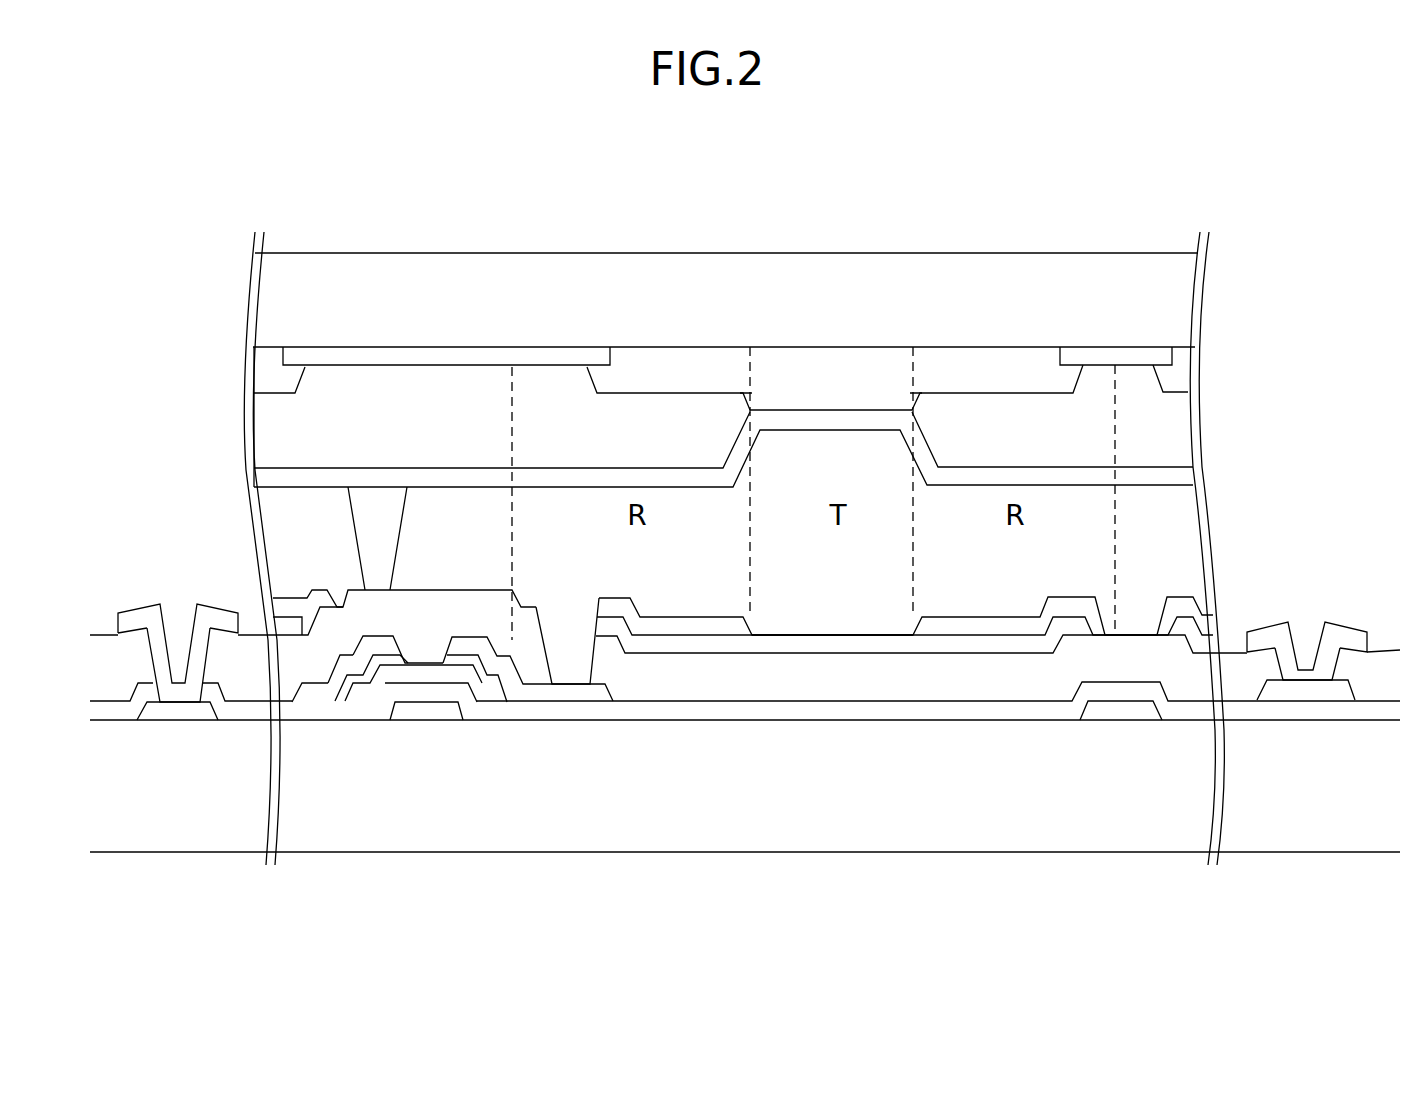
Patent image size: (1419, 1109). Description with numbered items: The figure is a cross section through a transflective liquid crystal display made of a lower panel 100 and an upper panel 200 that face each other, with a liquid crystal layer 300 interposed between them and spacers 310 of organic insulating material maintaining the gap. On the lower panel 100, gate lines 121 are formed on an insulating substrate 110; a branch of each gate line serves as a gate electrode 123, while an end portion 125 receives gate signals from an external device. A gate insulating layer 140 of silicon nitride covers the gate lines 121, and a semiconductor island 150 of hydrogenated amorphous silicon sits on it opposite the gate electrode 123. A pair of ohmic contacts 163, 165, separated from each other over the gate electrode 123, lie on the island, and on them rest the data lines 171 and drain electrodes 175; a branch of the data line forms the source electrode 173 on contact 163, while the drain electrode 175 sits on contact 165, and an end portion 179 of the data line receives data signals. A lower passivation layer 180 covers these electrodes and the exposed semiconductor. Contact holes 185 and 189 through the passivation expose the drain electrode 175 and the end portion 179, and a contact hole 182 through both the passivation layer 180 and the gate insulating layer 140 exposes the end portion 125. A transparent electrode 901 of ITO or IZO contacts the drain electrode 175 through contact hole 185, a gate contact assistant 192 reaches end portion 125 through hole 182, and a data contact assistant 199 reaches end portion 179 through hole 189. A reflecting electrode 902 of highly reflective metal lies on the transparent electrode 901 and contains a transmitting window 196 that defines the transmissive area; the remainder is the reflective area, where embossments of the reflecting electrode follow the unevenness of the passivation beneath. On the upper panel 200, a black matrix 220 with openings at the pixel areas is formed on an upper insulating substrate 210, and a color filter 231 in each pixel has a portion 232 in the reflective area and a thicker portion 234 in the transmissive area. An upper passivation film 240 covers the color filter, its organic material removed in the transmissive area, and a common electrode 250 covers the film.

The lower panel 100 is at (1162, 880).
The insulating substrate 110 is at (752, 832).
The gate line 121 is at (1112, 708).
The gate electrode 123 is at (427, 712).
The end portion of gate line 125 is at (178, 712).
The gate insulating layer 140 is at (913, 708).
The semiconductor island 150 is at (482, 690).
The ohmic contact 163 is at (362, 690).
The ohmic contact 165 is at (498, 672).
The data line 171 is at (320, 695).
The source electrode 173 is at (382, 648).
The drain electrode 175 is at (583, 695).
The end portion of data line 179 is at (1308, 692).
The lower passivation layer 180 is at (113, 683).
The contact hole 182 is at (175, 606).
The contact hole 185 is at (568, 655).
The contact hole 189 is at (1305, 626).
The gate contact assistant 192 is at (142, 618).
The transmitting window 196 is at (835, 616).
The data contact assistant 199 is at (1342, 638).
The upper panel 200 is at (1080, 230).
The upper insulating substrate 210 is at (488, 272).
The black matrix 220 is at (393, 357).
The color filter 231 is at (783, 336).
The portion of color filter in reflective area 232 is at (672, 375).
The portion of color filter in transmissive area 234 is at (850, 355).
The upper passivation film 240 is at (1173, 422).
The common electrode 250 is at (1173, 475).
The liquid crystal layer 300 is at (1182, 528).
The spacer 310 is at (368, 512).
The transparent electrode 901 is at (822, 643).
The reflecting electrode 902 is at (663, 627).